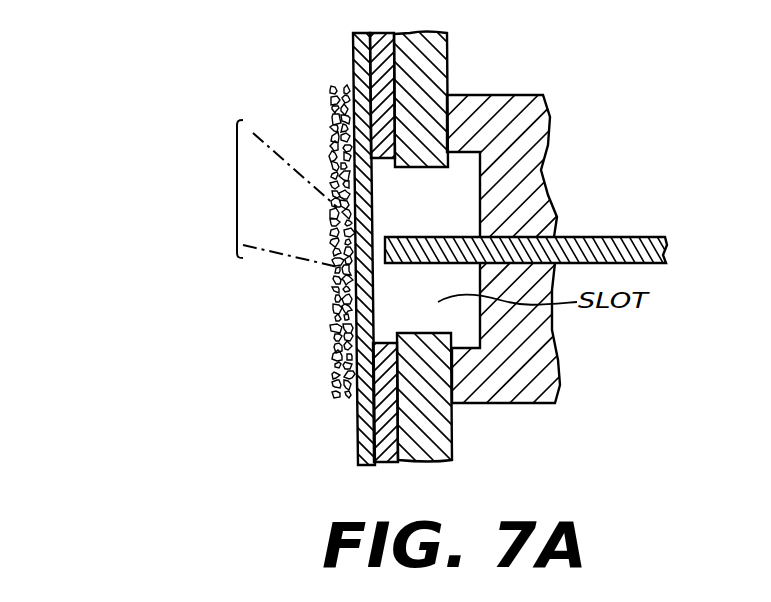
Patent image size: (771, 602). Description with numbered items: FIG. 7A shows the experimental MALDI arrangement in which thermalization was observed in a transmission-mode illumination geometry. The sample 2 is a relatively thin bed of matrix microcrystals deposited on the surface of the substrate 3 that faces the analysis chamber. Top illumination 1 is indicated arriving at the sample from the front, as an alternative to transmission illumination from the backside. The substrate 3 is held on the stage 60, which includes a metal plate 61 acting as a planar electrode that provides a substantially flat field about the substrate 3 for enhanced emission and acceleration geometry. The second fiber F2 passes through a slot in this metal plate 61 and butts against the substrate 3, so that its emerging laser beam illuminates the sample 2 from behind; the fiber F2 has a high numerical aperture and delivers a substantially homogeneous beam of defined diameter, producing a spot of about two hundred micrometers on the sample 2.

The top illumination 1 is at (237, 190).
The sample 2 is at (332, 372).
The substrate 3 is at (357, 436).
The stage 60 is at (521, 55).
The metal plate 61 is at (433, 53).
The second fiber F2 is at (582, 234).